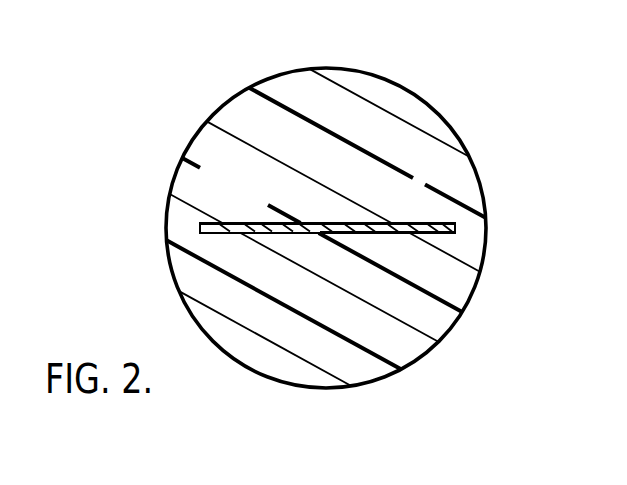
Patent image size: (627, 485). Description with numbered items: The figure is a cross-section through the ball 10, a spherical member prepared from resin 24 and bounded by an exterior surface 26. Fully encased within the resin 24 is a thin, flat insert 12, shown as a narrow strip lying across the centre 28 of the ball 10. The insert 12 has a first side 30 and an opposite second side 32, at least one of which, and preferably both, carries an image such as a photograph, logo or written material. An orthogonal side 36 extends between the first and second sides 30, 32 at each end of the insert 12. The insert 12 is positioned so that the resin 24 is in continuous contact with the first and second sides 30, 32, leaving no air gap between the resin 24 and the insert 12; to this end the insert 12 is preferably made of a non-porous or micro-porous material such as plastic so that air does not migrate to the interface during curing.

The ball 10 is at (466, 114).
The insert 12 is at (267, 223).
The resin 24 is at (421, 313).
The exterior surface 26 is at (384, 73).
The centre 28 is at (318, 223).
The first side 30 is at (388, 222).
The second side 32 is at (400, 234).
The orthogonal side 36 is at (168, 233).